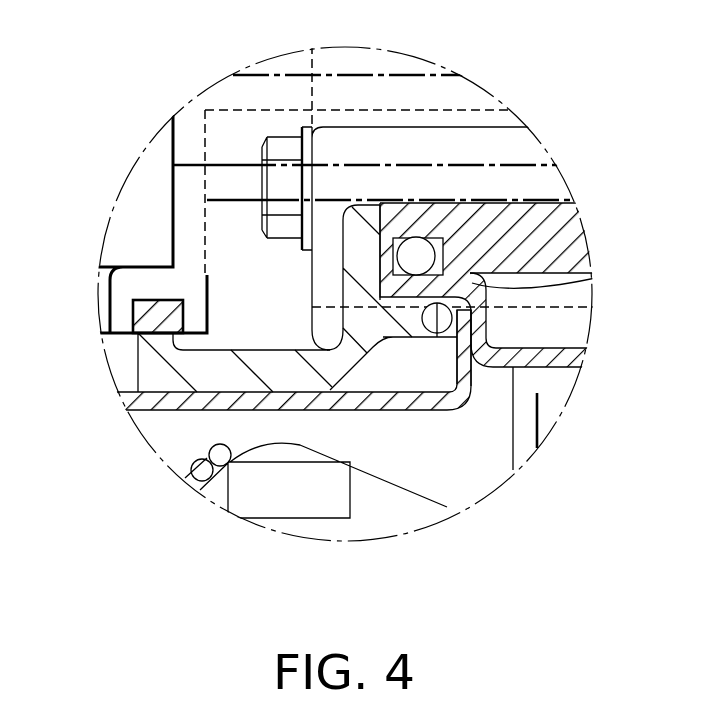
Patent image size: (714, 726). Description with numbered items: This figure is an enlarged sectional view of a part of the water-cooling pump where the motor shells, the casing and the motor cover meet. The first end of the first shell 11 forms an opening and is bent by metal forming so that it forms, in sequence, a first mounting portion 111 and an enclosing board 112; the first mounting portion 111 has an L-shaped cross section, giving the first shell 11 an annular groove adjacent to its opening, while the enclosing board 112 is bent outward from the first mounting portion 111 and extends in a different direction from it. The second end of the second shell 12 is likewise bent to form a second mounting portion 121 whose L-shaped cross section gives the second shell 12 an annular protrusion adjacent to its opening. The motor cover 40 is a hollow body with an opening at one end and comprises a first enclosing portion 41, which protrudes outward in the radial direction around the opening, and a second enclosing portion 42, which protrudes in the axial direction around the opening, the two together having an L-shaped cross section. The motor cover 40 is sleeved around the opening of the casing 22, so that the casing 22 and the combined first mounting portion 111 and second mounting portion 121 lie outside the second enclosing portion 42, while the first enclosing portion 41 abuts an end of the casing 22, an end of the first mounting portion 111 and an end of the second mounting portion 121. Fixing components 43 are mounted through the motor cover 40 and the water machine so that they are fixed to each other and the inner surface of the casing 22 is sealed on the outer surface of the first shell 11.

The first shell 11 is at (550, 360).
The first mounting portion 111 is at (593, 278).
The enclosing board 112 is at (427, 207).
The second shell 12 is at (187, 397).
The second mounting portion 121 is at (459, 340).
The casing 22 is at (517, 237).
The motor cover 40 is at (225, 377).
The first enclosing portion 41 is at (360, 243).
The second enclosing portion 42 is at (408, 325).
The fixing component 43 is at (275, 147).